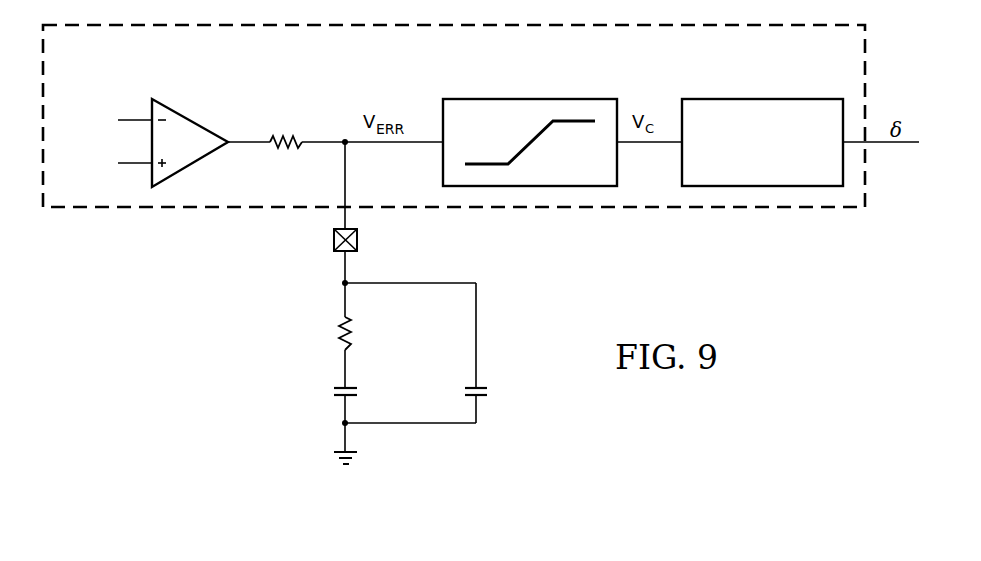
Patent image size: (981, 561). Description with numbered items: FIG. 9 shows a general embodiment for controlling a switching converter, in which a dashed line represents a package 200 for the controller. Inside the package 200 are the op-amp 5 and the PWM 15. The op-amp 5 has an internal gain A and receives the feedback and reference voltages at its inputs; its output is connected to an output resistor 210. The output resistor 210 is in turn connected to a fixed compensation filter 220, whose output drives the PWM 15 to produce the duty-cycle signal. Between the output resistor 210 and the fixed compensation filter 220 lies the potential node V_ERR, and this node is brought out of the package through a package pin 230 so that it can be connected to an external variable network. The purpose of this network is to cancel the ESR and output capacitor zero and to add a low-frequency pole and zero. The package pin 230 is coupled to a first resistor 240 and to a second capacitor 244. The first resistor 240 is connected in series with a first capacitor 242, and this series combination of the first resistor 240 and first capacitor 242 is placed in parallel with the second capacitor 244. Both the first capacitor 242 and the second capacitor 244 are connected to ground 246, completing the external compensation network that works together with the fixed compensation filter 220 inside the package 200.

The op-amp 5 is at (190, 117).
The output resistor 210 is at (286, 130).
The fixed compensation filter 220 is at (530, 99).
The PWM 15 is at (762, 99).
The package pin 230 is at (334, 240).
The first resistor 240 is at (337, 332).
The first capacitor 242 is at (334, 392).
The second capacitor 244 is at (487, 392).
The ground 246 is at (334, 455).
The package 200 is at (198, 312).